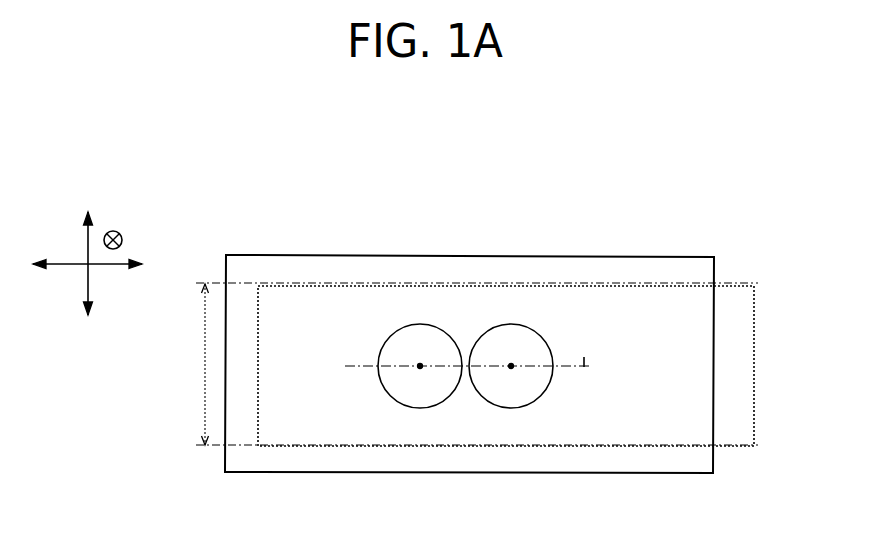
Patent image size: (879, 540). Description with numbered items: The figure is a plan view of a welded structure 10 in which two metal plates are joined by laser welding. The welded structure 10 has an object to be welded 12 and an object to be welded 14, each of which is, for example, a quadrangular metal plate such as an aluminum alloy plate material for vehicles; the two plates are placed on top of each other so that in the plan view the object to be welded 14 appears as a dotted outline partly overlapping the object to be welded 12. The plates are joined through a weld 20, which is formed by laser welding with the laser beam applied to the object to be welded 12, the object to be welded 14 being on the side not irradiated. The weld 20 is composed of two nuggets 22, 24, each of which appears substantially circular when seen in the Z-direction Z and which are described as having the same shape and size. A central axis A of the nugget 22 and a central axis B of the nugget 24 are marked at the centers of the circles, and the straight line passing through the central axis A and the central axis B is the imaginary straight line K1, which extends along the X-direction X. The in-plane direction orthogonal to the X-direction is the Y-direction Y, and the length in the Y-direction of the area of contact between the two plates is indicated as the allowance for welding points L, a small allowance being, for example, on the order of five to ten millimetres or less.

The welded structure 10 is at (485, 301).
The object to be welded 12 is at (608, 257).
The object to be welded 14 is at (757, 292).
The weld 20 is at (466, 327).
The nugget 22 is at (402, 346).
The nugget 24 is at (507, 345).
The central axis A is at (421, 364).
The central axis B is at (512, 364).
The imaginary straight line K1 is at (584, 357).
The allowance for welding points L is at (204, 368).
The X-direction X is at (100, 266).
The Y-direction Y is at (82, 245).
The Z-direction Z is at (115, 227).